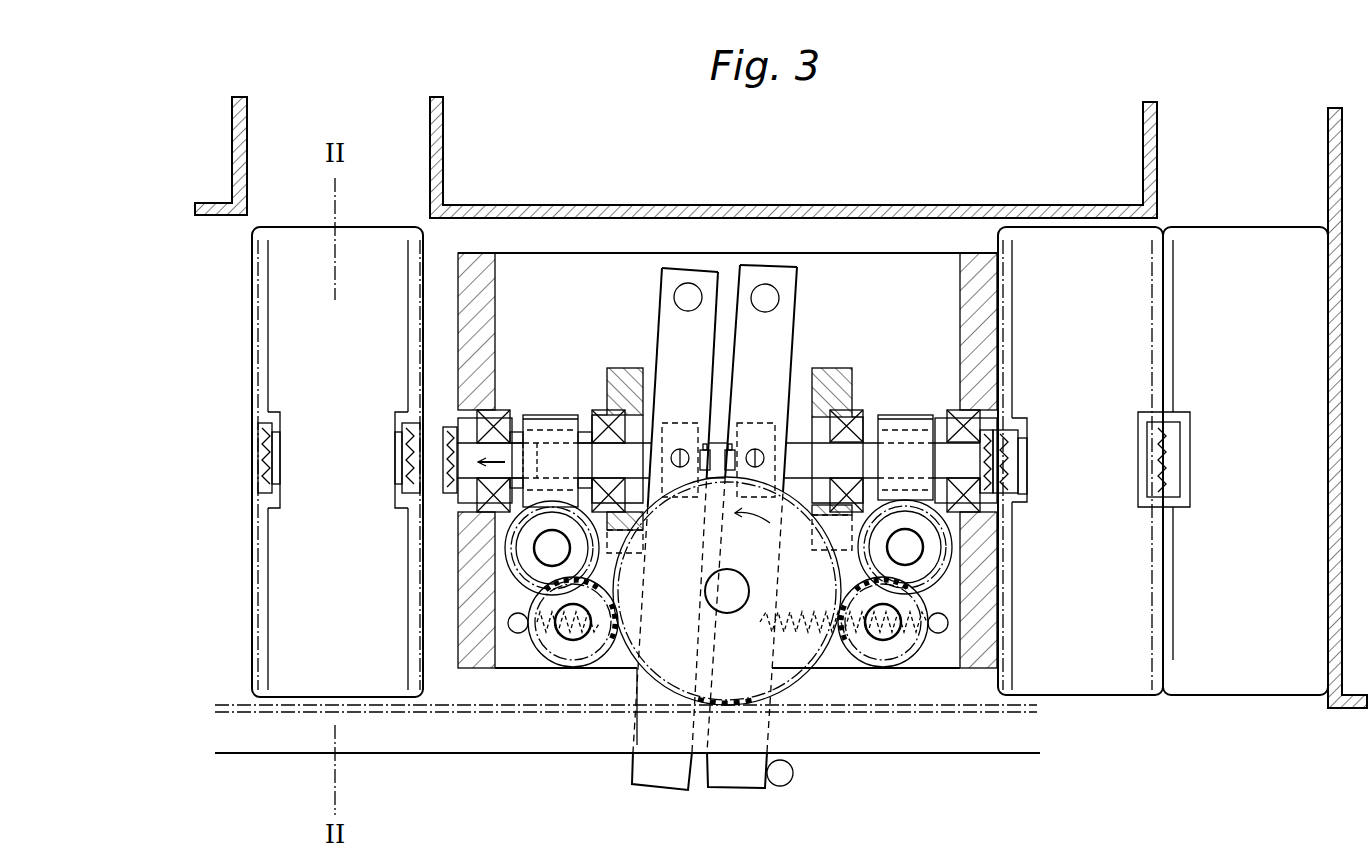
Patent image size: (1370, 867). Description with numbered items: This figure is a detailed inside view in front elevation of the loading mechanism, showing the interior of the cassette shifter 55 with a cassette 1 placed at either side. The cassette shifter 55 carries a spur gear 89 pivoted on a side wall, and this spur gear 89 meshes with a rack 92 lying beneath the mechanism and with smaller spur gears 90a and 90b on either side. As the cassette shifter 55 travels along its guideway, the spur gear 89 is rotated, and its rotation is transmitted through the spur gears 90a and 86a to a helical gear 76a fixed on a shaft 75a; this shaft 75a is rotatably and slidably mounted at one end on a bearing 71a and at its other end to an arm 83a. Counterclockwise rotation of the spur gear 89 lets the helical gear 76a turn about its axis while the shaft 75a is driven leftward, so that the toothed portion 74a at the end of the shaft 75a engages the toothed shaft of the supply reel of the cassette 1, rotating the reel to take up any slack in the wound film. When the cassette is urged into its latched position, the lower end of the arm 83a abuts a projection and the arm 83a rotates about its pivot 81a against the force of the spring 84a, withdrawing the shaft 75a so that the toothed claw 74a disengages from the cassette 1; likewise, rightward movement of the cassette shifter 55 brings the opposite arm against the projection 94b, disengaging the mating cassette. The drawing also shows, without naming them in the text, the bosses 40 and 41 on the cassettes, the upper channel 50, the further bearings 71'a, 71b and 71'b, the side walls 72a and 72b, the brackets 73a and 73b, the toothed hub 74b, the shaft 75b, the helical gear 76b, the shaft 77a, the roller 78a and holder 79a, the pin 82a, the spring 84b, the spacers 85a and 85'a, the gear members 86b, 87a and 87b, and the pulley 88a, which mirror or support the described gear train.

The cassette 1 is at (327, 339).
The boss 40 is at (260, 486).
The boss 41 is at (1157, 495).
The channel frame 50 is at (383, 188).
The cassette shifter 55 is at (863, 261).
The bearing 71a is at (498, 412).
The bearing 71'a is at (593, 412).
The bearing 71b is at (950, 410).
The bearing 71'b is at (864, 440).
The side wall 72a is at (468, 610).
The side wall 72b is at (977, 262).
The bearing bracket 73a is at (627, 368).
The bearing bracket 73b is at (845, 370).
The toothed portion 74a is at (450, 470).
The coupling hub 74b is at (990, 495).
The shaft 75a is at (468, 470).
The shaft 75b is at (793, 446).
The helical gear 76a is at (550, 415).
The pulley 76b is at (915, 415).
The shaft 77a is at (537, 492).
The roller 78a is at (682, 468).
The roller holder 79a is at (680, 423).
The pivot 81a is at (692, 290).
The pin 82a is at (710, 448).
The arm 83a is at (638, 782).
The spring 84a is at (588, 658).
The gear 84b is at (832, 665).
The spacer 85a is at (517, 432).
The spacer 85'a is at (580, 432).
The spur gear 86a is at (502, 578).
The bracket 86b is at (952, 597).
The gear ring 87a is at (520, 625).
The pulley 87b is at (950, 568).
The pulley 88a is at (540, 548).
The spur gear 89 is at (795, 685).
The spur gear 90a is at (540, 660).
The spur gear 90b is at (912, 668).
The rack 92 is at (436, 752).
The projection 94b is at (790, 778).